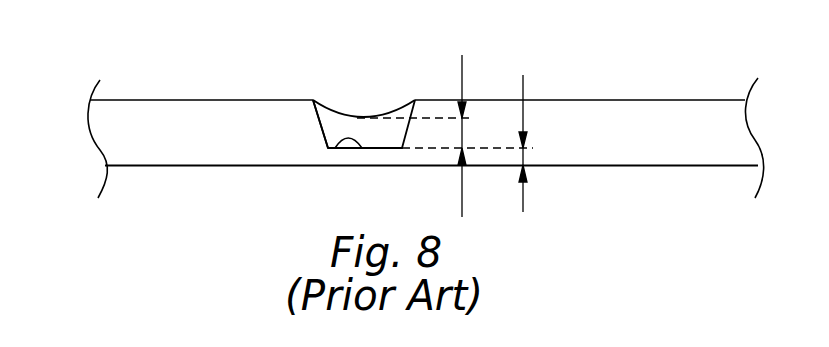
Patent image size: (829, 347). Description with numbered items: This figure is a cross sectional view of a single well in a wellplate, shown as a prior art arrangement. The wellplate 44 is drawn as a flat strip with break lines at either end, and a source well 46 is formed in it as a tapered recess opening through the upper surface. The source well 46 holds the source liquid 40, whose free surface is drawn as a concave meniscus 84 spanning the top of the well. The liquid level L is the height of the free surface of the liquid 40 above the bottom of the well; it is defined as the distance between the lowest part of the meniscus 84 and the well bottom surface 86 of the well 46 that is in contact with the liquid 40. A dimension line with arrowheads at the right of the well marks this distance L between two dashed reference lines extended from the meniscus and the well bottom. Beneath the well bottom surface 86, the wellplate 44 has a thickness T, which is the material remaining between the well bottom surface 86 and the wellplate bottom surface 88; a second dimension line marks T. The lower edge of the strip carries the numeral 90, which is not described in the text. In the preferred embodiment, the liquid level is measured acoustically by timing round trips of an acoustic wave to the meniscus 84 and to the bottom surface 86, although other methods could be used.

The source liquid 40 is at (356, 123).
The wellplate 44 is at (95, 120).
The source well 46 is at (318, 122).
The meniscus 84 is at (325, 105).
The well bottom surface 86 is at (335, 148).
The wellplate bottom surface 88 is at (377, 166).
The lower surface 90 is at (212, 166).
The liquid level L is at (473, 133).
The thickness T is at (525, 158).